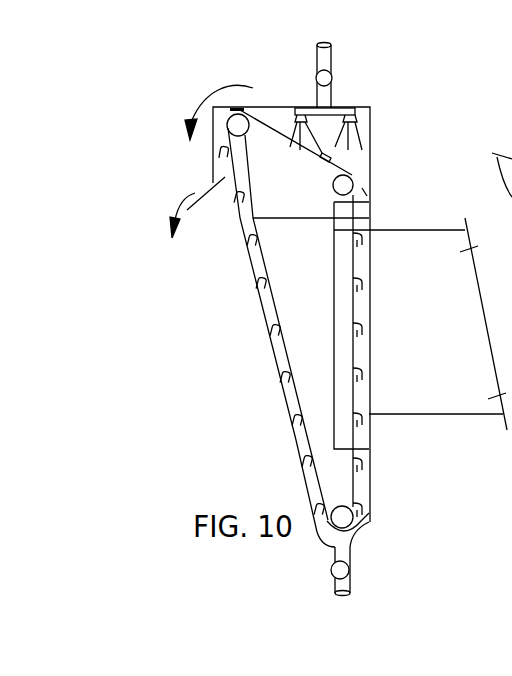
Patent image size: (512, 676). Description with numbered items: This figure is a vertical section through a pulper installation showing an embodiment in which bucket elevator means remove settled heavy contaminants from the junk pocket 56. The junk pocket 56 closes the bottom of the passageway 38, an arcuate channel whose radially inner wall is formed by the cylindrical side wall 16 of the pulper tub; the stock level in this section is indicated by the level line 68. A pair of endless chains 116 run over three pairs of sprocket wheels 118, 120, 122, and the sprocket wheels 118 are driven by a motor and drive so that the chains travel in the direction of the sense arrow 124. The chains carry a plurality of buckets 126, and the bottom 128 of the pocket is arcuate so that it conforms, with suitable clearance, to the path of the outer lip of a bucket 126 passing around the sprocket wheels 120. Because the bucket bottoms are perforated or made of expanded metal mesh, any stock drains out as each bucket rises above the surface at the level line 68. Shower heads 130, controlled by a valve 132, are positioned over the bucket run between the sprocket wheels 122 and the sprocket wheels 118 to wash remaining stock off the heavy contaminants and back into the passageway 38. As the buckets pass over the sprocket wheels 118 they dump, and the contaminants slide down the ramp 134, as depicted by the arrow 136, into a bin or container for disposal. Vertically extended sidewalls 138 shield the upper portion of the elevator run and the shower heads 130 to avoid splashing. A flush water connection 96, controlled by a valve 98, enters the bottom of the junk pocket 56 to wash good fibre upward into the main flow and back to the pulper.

The side wall 16 is at (390, 230).
The passageway 38 is at (340, 320).
The junk pocket 56 is at (370, 521).
The level line 68 is at (284, 217).
The flush water connection 96 is at (350, 546).
The valve 98 is at (350, 571).
The endless chains 116 is at (320, 157).
The sprocket wheels 118 is at (241, 134).
The sprocket wheels 120 is at (340, 509).
The sprocket wheels 122 is at (333, 185).
The sense arrow 124 is at (219, 105).
The buckets 126 is at (224, 153).
The bottom 128 is at (322, 538).
The shower heads 130 is at (298, 116).
The valve 132 is at (331, 73).
The ramp 134 is at (196, 203).
The arrow 136 is at (190, 195).
The vertically extended sidewalls 138 is at (371, 137).